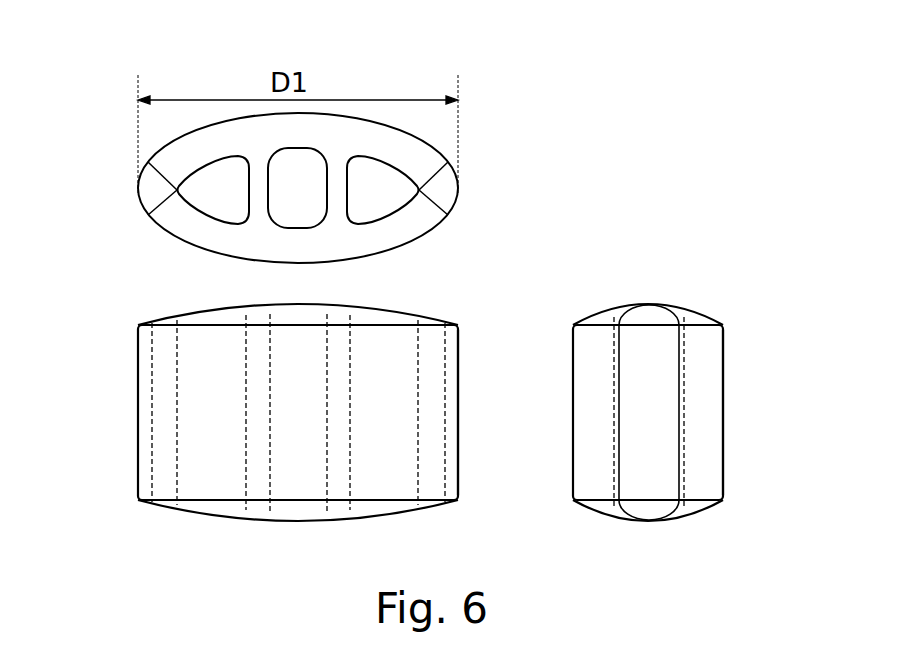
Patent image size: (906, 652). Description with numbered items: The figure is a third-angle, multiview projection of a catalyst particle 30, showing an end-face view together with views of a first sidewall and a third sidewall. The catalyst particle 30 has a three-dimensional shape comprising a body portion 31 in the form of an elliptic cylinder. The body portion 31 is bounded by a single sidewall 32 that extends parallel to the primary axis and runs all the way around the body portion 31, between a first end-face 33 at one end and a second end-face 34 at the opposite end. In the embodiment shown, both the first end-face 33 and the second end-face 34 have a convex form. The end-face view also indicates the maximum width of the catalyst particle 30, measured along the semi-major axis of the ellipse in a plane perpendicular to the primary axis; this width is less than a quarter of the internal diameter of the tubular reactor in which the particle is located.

The catalyst particle 30 is at (119, 430).
The body portion 31 is at (313, 432).
The sidewall 32 is at (459, 388).
The first end-face 33 is at (348, 150).
The second end-face 34 is at (440, 512).